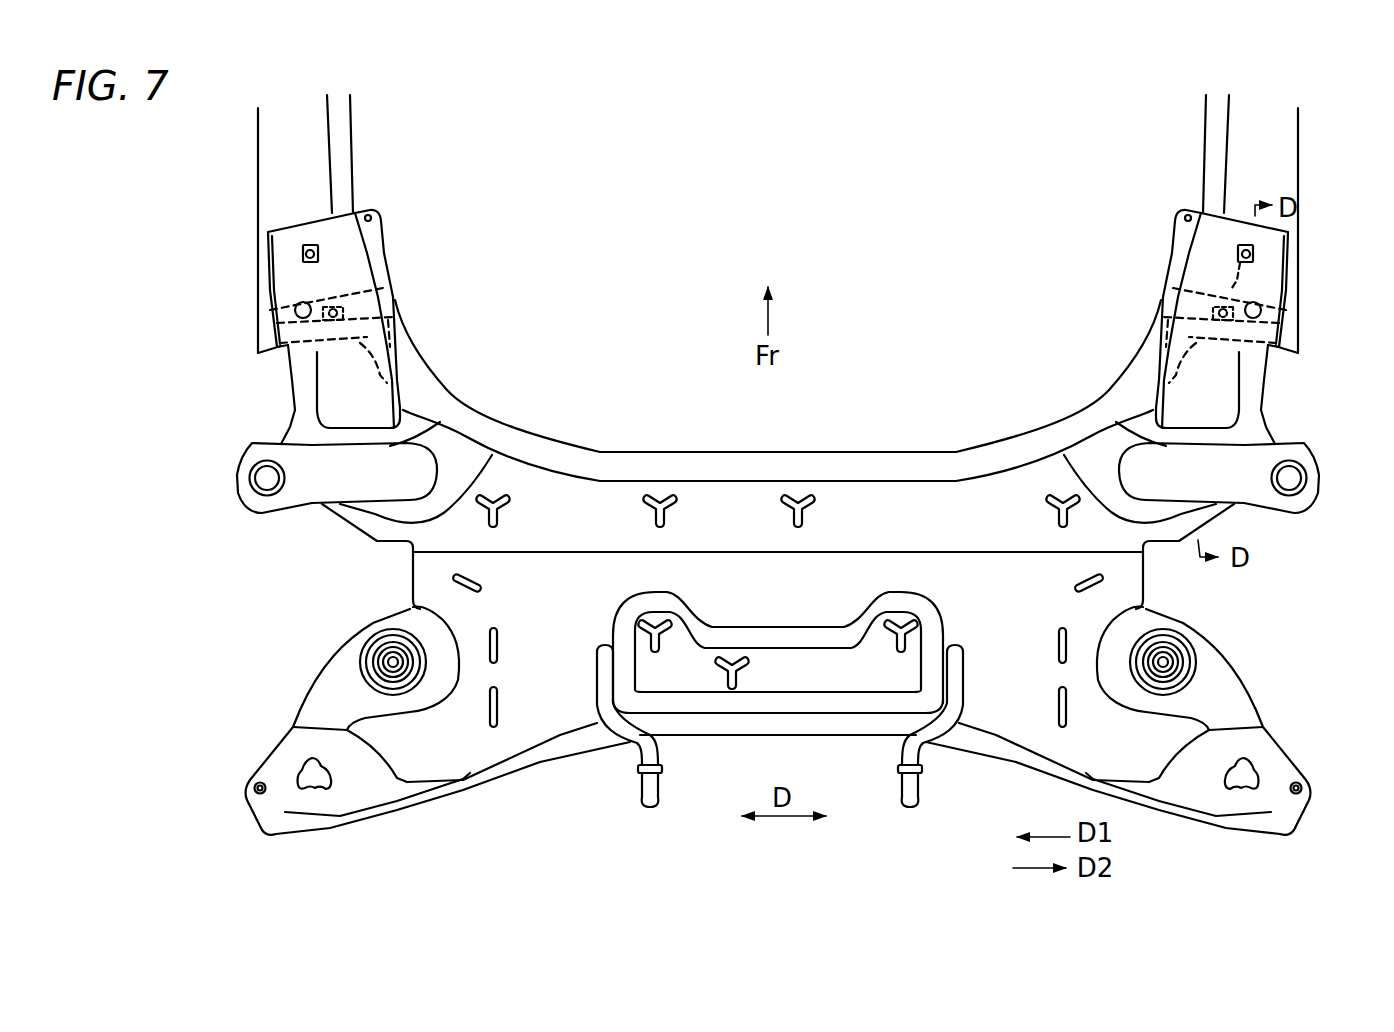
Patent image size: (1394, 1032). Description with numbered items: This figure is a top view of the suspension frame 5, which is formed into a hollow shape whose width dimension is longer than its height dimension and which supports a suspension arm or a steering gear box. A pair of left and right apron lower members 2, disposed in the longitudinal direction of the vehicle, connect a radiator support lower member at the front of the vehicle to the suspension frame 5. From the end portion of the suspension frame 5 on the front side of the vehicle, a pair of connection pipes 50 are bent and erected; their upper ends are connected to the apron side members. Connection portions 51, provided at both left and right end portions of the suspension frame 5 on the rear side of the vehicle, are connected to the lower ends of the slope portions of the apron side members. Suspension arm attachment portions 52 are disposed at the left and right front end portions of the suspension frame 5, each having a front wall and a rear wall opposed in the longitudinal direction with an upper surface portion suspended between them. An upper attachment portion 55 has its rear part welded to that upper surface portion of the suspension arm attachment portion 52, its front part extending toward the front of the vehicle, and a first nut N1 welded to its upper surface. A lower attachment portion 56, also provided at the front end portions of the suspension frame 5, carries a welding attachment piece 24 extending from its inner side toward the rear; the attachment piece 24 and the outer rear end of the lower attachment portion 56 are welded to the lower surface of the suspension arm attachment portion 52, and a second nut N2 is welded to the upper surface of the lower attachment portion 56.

The apron lower member 2 is at (277, 139).
The suspension frame 5 is at (904, 322).
The welding attachment piece 24 is at (397, 337).
The connection pipe 50 is at (440, 422).
The connection portion 51 is at (280, 797).
The suspension arm attachment portion 52 is at (266, 394).
The upper attachment portion 55 is at (379, 252).
The lower attachment portion 56 is at (387, 296).
The first nut N1 is at (303, 255).
The second nut N2 is at (281, 323).